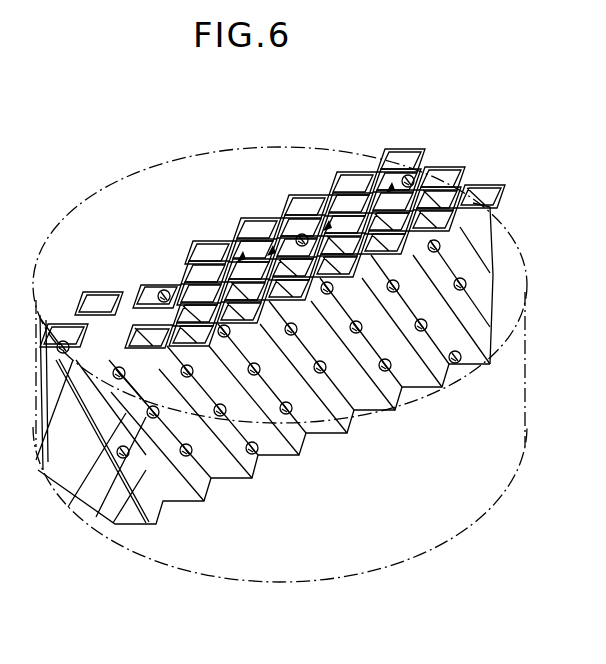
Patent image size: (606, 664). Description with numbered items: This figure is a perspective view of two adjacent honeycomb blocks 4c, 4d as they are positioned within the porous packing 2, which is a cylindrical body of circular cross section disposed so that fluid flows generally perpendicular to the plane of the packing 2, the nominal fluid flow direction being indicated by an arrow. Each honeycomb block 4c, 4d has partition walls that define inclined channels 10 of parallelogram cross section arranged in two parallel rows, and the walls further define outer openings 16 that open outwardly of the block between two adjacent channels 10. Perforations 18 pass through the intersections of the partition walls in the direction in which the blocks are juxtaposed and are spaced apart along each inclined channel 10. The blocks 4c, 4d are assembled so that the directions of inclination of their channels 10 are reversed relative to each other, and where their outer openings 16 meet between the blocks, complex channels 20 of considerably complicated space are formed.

The porous packing 2 is at (95, 172).
The honeycomb block 4c is at (402, 146).
The honeycomb block 4d is at (490, 188).
The inclined channels 10 is at (100, 300).
The outer openings 16 is at (225, 399).
The perforations 18 is at (303, 236).
The complex channels 20 is at (240, 256).